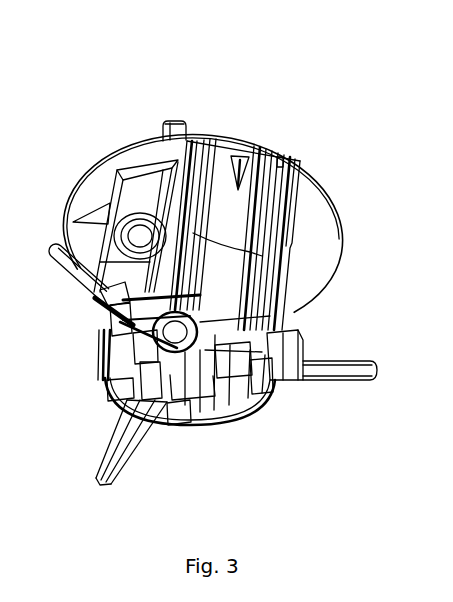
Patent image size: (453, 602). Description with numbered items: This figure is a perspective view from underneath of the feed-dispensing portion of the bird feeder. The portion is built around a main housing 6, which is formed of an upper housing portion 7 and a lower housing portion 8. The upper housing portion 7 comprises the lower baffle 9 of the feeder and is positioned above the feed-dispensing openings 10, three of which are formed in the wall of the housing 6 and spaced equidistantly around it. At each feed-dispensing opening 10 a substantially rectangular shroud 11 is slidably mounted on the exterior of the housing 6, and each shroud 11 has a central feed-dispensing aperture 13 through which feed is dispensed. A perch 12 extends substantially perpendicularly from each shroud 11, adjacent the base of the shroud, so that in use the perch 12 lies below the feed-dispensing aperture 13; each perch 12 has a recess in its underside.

The main housing 6 is at (358, 125).
The upper housing portion 7 is at (228, 141).
The lower housing portion 8 is at (208, 283).
The lower baffle 9 is at (303, 197).
The feed-dispensing opening 10 is at (128, 217).
The shroud 11 is at (157, 197).
The perch 12 is at (76, 262).
The feed-dispensing aperture 13 is at (139, 213).